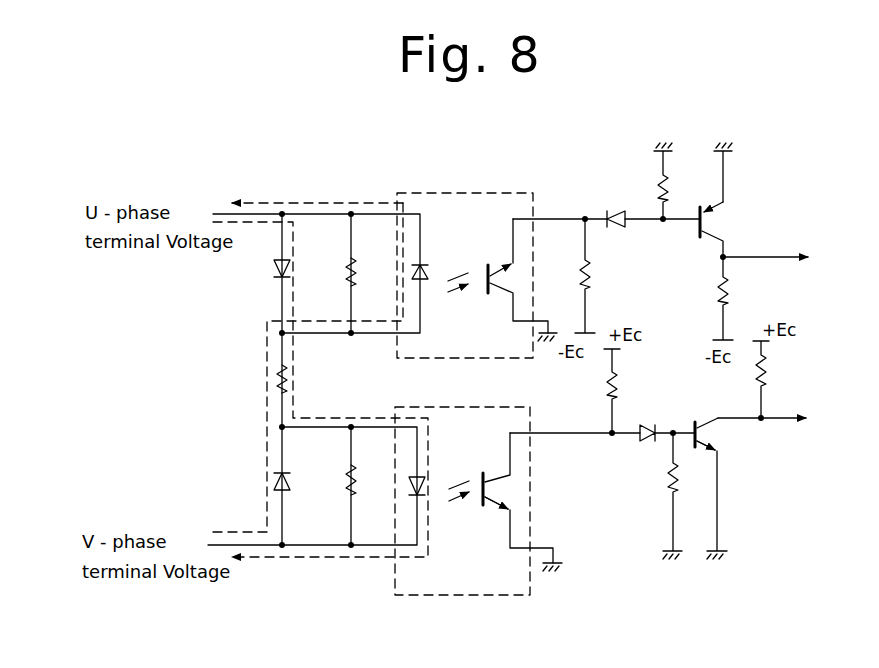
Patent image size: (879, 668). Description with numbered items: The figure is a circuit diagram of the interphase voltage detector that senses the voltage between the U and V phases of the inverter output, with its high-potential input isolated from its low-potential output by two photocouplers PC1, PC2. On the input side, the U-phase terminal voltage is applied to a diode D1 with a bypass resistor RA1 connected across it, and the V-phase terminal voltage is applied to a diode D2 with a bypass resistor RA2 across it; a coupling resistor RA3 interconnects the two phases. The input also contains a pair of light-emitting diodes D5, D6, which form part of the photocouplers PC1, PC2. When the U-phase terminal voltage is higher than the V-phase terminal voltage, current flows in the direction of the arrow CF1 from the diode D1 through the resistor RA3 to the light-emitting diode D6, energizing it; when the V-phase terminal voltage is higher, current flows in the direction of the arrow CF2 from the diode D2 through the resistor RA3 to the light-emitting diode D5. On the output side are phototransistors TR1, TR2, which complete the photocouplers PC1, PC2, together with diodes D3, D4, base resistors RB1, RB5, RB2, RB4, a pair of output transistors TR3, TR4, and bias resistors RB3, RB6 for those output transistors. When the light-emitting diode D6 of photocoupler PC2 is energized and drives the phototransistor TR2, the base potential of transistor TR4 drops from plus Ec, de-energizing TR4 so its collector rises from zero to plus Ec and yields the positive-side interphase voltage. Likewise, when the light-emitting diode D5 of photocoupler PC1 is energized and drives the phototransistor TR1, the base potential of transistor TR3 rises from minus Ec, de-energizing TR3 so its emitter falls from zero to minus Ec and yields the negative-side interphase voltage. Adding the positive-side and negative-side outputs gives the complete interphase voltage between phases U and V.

The arrow CF1 is at (335, 558).
The arrow CF2 is at (345, 206).
The photocoupler PC1 is at (476, 260).
The photocoupler PC2 is at (470, 488).
The diode D1 is at (267, 270).
The diode D2 is at (262, 480).
The diode D3 is at (615, 206).
The diode D4 is at (638, 446).
The light-emitting diode D5 is at (440, 289).
The light-emitting diode D6 is at (439, 501).
The bypass resistor RA1 is at (333, 272).
The bypass resistor RA2 is at (329, 480).
The coupling resistor RA3 is at (302, 379).
The base resistor RB1 is at (681, 181).
The base resistor RB2 is at (600, 276).
The bias resistor RB3 is at (738, 298).
The base resistor RB4 is at (629, 391).
The base resistor RB5 is at (653, 496).
The bias resistor RB6 is at (778, 379).
The phototransistor TR1 is at (510, 280).
The phototransistor TR2 is at (509, 502).
The output transistor TR3 is at (700, 203).
The output transistor TR4 is at (705, 473).